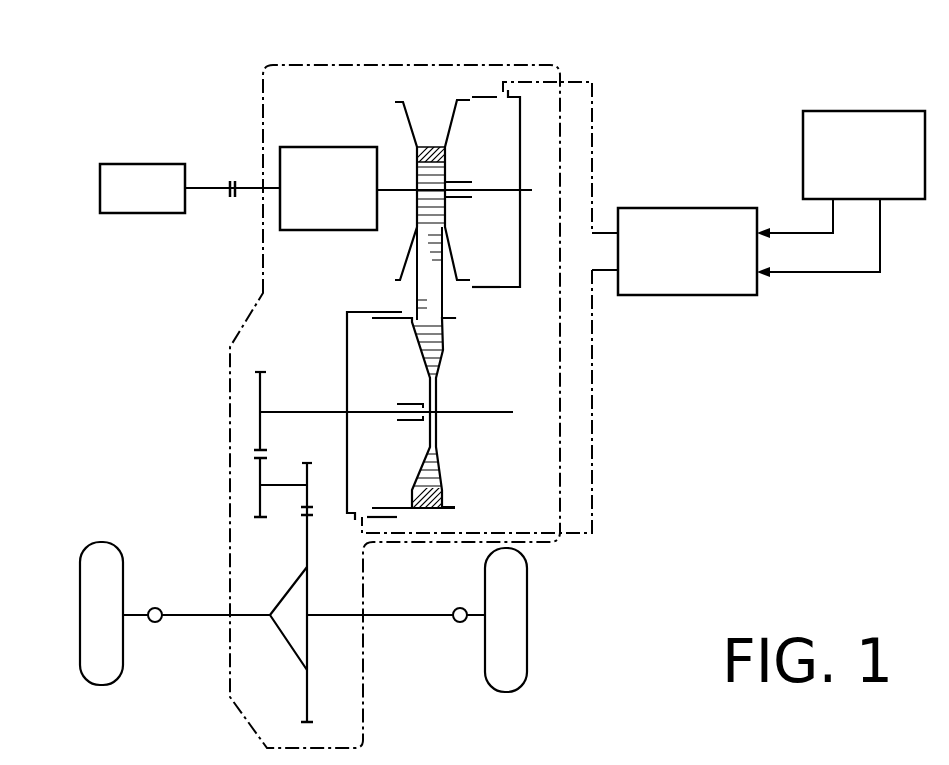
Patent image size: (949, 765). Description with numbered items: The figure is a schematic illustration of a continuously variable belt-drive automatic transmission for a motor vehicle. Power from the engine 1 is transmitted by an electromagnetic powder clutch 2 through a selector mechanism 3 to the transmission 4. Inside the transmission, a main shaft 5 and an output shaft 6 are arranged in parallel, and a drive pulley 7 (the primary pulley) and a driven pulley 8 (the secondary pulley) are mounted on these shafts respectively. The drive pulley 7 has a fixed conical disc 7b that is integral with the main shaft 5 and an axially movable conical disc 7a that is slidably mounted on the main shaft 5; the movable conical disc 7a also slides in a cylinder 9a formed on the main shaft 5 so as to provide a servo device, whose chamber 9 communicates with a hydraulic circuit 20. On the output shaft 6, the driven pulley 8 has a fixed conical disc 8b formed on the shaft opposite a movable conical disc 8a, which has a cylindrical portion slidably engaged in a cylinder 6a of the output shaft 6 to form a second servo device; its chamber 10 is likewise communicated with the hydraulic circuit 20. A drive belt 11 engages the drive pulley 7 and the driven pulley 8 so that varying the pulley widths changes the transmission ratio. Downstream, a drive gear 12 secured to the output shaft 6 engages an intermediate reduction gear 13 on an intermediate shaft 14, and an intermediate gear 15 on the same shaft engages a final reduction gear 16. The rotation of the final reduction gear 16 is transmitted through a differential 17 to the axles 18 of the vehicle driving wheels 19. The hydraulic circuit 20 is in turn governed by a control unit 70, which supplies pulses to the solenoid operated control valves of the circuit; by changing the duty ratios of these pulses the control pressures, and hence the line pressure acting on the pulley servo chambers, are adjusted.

The engine 1 is at (149, 163).
The electromagnetic powder clutch 2 is at (233, 178).
The selector mechanism 3 is at (328, 146).
The transmission 4 is at (438, 98).
The main shaft 5 is at (391, 193).
The output shaft 6 is at (308, 410).
The cylinder 6a is at (370, 310).
The drive pulley 7 is at (432, 164).
The movable conical disc 7a is at (464, 98).
The fixed conical disc 7b is at (401, 145).
The driven pulley 8 is at (436, 405).
The conical disc 8a is at (414, 324).
The fixed conical disc 8b is at (442, 354).
The chamber 9 is at (520, 148).
The cylinder 9a is at (498, 290).
The chamber 10 is at (347, 348).
The drive belt 11 is at (432, 508).
The drive gear 12 is at (264, 369).
The intermediate reduction gear 13 is at (262, 522).
The intermediate shaft 14 is at (285, 484).
The intermediate gear 15 is at (309, 462).
The final reduction gear 16 is at (309, 722).
The differential 17 is at (294, 598).
The axles 18 is at (150, 618).
The driving wheels 19 is at (122, 570).
The hydraulic circuit 20 is at (682, 296).
The control unit 70 is at (838, 110).